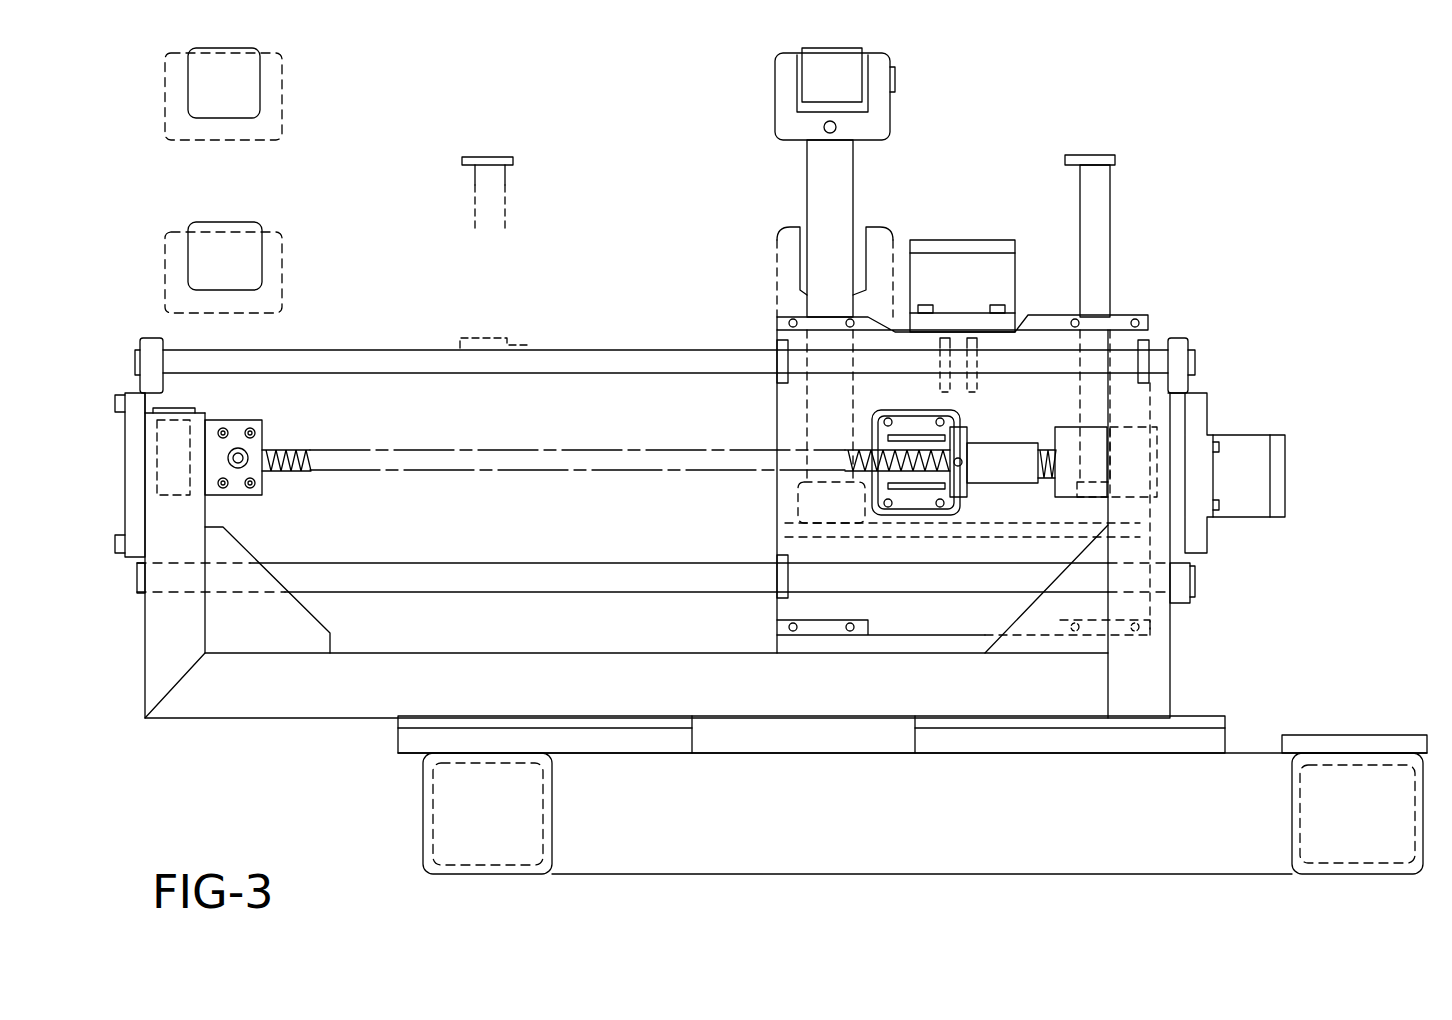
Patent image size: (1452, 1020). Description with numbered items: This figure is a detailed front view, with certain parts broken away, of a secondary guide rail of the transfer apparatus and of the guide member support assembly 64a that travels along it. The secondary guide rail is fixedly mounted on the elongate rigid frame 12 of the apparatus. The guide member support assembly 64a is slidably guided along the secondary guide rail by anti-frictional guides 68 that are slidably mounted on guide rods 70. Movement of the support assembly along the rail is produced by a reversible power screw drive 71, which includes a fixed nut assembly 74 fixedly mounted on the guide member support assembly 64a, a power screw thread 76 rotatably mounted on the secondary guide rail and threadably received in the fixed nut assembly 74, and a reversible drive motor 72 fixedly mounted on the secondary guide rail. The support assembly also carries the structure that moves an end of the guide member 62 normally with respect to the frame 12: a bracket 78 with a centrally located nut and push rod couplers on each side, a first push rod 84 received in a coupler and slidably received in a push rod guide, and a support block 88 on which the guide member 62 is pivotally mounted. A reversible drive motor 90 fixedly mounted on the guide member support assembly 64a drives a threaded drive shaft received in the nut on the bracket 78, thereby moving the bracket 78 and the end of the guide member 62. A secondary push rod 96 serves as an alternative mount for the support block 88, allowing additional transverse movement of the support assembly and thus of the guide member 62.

The frame 12 is at (1247, 777).
The guide member 62 is at (822, 85).
The guide member support assembly 64a is at (1130, 345).
The anti-frictional guides 68 is at (778, 352).
The guide rods 70 is at (540, 362).
The reversible power screw drive 71 is at (1210, 430).
The reversible drive motor 72 is at (1280, 475).
The fixed nut assembly 74 is at (1017, 455).
The power screw thread 76 is at (913, 477).
The bracket 78 is at (1032, 530).
The first push rod 84 is at (845, 205).
The support block 88 is at (275, 78).
The reversible drive motor 90 is at (960, 240).
The secondary push rod 96 is at (500, 197).